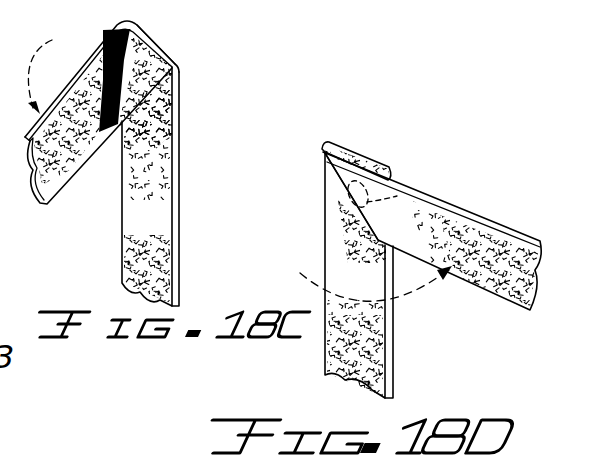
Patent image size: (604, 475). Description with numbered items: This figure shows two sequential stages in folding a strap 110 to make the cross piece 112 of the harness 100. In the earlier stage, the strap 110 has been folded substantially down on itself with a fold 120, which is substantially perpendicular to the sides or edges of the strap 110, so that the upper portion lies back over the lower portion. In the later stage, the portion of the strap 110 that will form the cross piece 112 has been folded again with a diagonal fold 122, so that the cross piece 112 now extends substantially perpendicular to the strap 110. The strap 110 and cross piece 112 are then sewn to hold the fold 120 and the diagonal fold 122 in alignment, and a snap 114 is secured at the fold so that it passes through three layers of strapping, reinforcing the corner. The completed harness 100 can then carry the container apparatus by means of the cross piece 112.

In FIG. 18D, the harness 100 is at (405, 350).
In FIG. 18C, the strap 110 is at (165, 254).
In FIG. 18D, the strap 110 is at (333, 258).
In FIG. 18C, the cross piece 112 is at (87, 76).
In FIG. 18D, the cross piece 112 is at (474, 230).
In FIG. 18D, the snap 114 is at (396, 192).
In FIG. 18C, the fold 120 is at (177, 63).
In FIG. 18D, the fold 120 is at (357, 150).
In FIG. 18C, the diagonal fold 122 is at (139, 34).
In FIG. 18D, the diagonal fold 122 is at (335, 190).